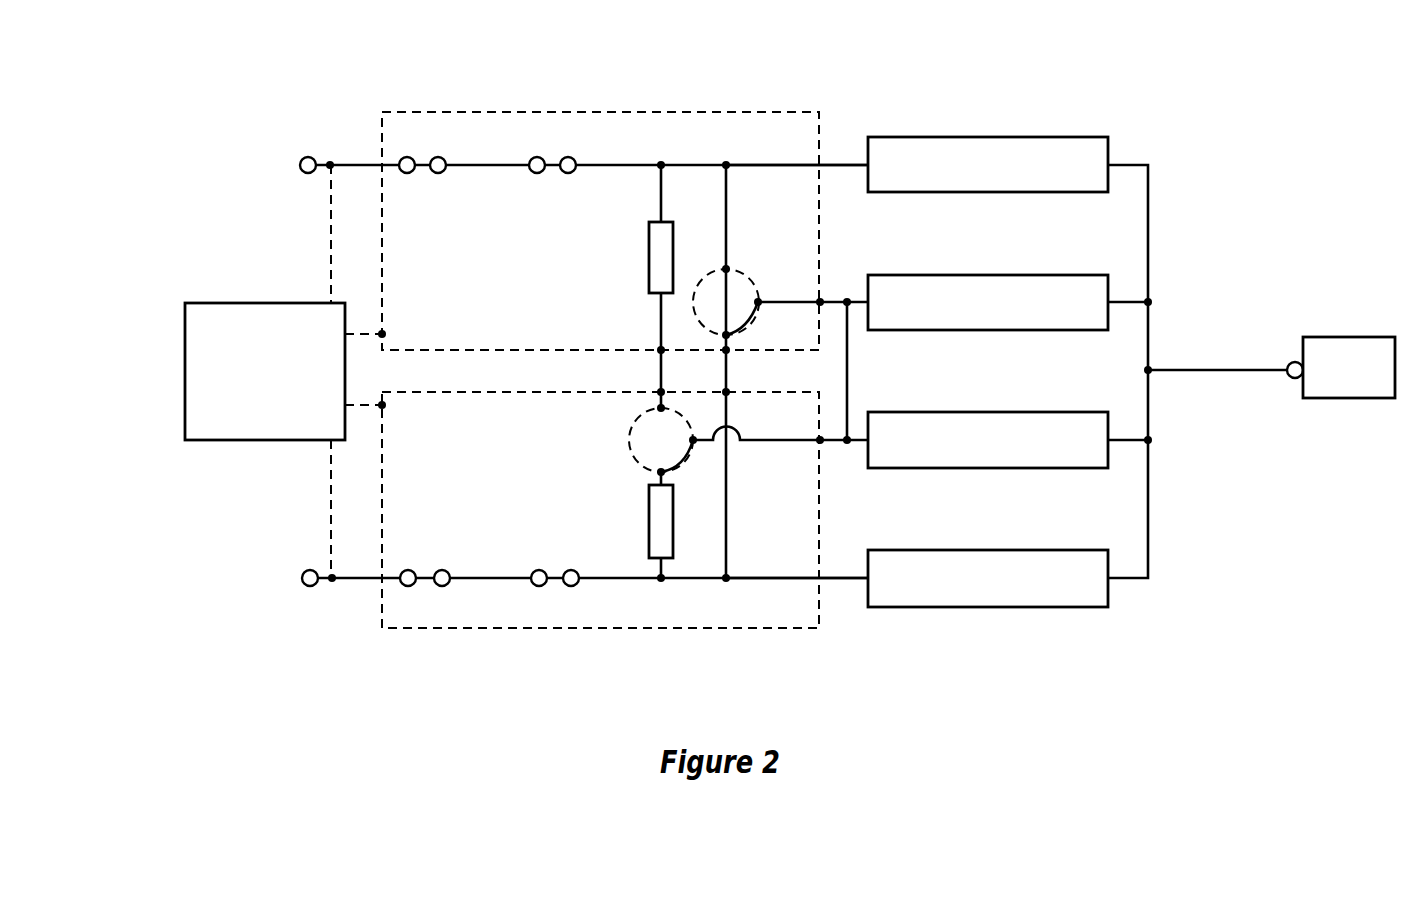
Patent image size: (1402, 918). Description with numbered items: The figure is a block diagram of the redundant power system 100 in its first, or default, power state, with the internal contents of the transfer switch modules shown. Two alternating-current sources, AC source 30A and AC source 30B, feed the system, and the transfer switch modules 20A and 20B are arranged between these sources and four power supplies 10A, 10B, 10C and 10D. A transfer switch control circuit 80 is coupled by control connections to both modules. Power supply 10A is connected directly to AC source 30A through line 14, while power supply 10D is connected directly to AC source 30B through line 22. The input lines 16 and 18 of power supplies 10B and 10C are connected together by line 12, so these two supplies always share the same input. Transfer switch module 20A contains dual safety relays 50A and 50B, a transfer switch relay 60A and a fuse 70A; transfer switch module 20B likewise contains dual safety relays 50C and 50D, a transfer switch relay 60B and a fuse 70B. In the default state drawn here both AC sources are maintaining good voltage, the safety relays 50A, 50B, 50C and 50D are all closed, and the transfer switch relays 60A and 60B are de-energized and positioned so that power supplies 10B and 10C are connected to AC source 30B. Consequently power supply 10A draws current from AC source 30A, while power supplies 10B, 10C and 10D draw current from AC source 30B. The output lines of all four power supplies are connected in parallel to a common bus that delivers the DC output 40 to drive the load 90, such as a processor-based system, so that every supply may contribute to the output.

The power system 100 is at (450, 62).
The power supply 10A is at (988, 135).
The power supply 10B is at (988, 273).
The power supply 10C is at (990, 410).
The power supply 10D is at (990, 548).
The line 12 is at (849, 390).
The line 14 is at (833, 163).
The power supply input line 16 is at (833, 300).
The power supply input line 18 is at (832, 443).
The line 22 is at (832, 581).
The transfer switch module 20A is at (595, 112).
The transfer switch module 20B is at (598, 628).
The AC source 30A is at (306, 174).
The AC source 30B is at (310, 586).
The DC output 40 is at (1293, 378).
The safety relay 50A is at (436, 157).
The safety relay 50B is at (557, 158).
The safety relay 50C is at (428, 582).
The safety relay 50D is at (558, 582).
The transfer switch relay 60A is at (742, 268).
The transfer switch relay 60B is at (628, 440).
The fuse 70A is at (648, 260).
The fuse 70B is at (648, 523).
The transfer switch control circuit 80 is at (267, 303).
The load 90 is at (1368, 400).